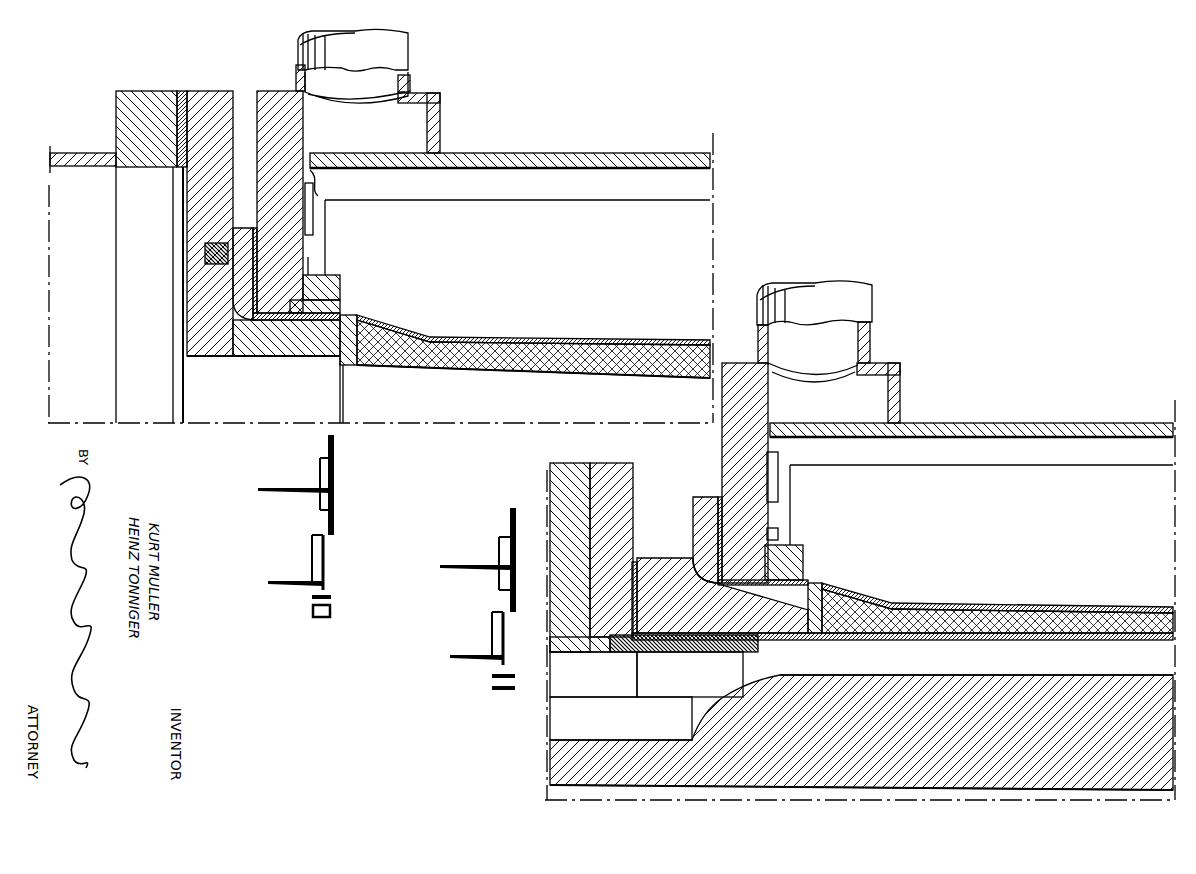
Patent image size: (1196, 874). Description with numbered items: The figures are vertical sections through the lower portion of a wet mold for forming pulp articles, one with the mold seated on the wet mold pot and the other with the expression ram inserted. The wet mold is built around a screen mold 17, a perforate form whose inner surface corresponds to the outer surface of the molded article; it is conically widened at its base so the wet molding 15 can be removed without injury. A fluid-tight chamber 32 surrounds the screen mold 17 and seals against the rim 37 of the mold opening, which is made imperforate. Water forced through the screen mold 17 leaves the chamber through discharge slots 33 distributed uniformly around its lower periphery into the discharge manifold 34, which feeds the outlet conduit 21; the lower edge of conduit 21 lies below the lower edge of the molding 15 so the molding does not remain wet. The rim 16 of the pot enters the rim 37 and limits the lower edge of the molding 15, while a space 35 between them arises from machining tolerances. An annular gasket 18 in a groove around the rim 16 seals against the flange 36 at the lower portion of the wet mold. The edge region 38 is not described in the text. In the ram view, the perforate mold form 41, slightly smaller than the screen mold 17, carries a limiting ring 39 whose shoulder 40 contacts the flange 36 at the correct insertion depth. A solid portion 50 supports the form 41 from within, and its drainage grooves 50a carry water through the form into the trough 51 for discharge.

In FIG. 10, the wet molding 15 is at (606, 366).
In FIG. 11, the wet molding 15 is at (1060, 630).
In FIG. 10, the rim 16 is at (245, 345).
In FIG. 10, the screen mold 17 is at (611, 341).
In FIG. 11, the screen mold 17 is at (1085, 607).
In FIG. 10, the annular gasket 18 is at (200, 251).
In FIG. 10, the fluid conduit 21 is at (298, 52).
In FIG. 10, the fluid-tight chamber 32 is at (619, 156).
In FIG. 10, the discharge slots 33 is at (308, 257).
In FIG. 10, the discharge manifold 34 is at (430, 93).
In FIG. 10, the space 35 is at (274, 323).
In FIG. 10, the annular ring or flange 36 is at (243, 229).
In FIG. 11, the annular ring or flange 36 is at (708, 500).
In FIG. 10, the rim of the screen mold 37 is at (340, 300).
In FIG. 10, the edge strip 38 is at (354, 366).
In FIG. 11, the limiting ring 39 is at (658, 568).
In FIG. 11, the shoulder 40 is at (697, 566).
In FIG. 11, the perforate mold form 41 is at (1035, 640).
In FIG. 11, the solid portion 50 is at (978, 681).
In FIG. 11, the drainage grooves 50a is at (1125, 660).
In FIG. 11, the trough 51 is at (668, 689).